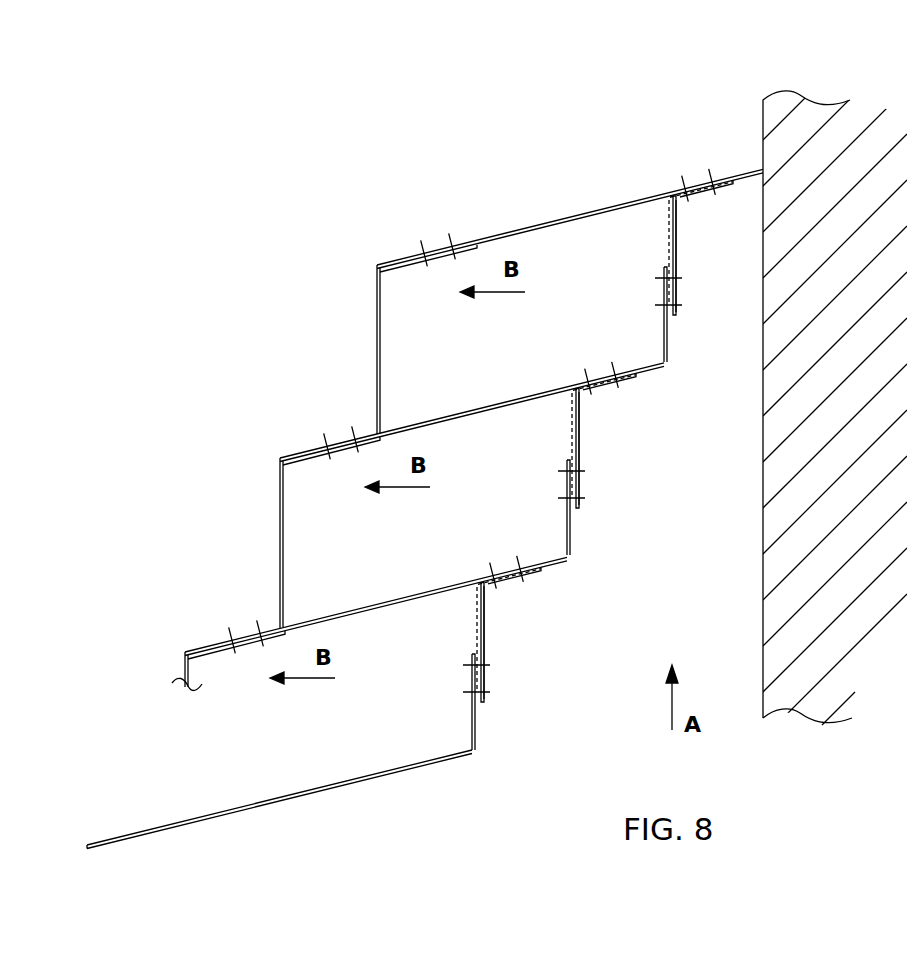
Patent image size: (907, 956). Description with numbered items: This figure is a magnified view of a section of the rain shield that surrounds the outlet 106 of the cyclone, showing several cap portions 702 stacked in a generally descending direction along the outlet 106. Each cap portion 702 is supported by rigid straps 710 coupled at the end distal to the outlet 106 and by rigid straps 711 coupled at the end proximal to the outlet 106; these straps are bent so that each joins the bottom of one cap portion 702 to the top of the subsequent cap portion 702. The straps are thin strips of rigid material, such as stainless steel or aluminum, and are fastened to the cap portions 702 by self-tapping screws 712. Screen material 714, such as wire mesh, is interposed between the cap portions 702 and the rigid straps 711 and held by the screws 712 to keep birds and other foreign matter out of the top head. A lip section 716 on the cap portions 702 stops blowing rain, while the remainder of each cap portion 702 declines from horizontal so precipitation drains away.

The outlet 106 is at (868, 142).
The cap portion 702 is at (560, 219).
The rigid strap 710 is at (377, 312).
The rigid strap 711 is at (676, 254).
The self-tapping screw 712 is at (451, 232).
The screen material 714 is at (671, 240).
The lip section 716 is at (668, 340).